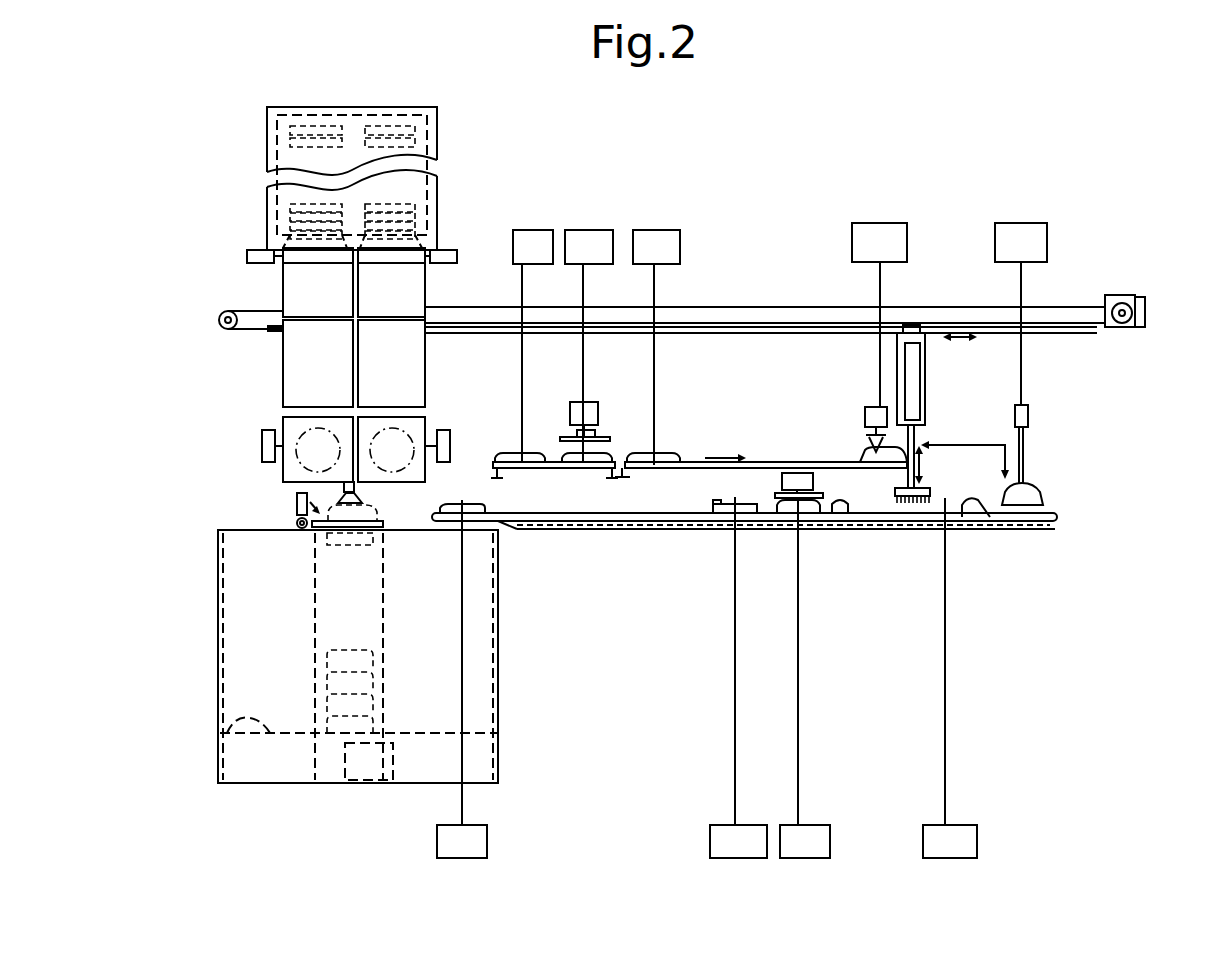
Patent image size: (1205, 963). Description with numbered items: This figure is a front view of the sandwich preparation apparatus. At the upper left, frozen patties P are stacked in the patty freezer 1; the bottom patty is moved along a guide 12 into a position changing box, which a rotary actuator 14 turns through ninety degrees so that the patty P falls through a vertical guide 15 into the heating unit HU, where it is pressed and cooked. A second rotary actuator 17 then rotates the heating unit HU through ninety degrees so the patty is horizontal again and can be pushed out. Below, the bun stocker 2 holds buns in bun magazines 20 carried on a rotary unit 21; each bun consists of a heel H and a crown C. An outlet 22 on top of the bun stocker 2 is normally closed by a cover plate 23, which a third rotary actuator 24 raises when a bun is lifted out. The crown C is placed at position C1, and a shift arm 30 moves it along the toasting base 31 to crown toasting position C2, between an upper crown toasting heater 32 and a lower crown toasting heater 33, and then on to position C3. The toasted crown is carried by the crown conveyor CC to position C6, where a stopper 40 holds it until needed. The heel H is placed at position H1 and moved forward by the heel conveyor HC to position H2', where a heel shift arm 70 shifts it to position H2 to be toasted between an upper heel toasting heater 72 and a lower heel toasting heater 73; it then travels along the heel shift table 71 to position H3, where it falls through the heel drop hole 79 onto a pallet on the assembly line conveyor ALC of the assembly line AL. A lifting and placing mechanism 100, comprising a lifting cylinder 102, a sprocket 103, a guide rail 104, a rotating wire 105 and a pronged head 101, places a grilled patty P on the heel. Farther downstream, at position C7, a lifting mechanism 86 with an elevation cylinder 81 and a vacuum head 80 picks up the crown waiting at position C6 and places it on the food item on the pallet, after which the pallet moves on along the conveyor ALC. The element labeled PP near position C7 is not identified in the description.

The patty freezer 1 is at (251, 132).
The patty P is at (412, 137).
The bun stocker 2 is at (211, 708).
The guide 12 is at (295, 292).
The rotary actuator 14 is at (252, 250).
The vertical guide 15 is at (298, 377).
The second rotary actuator 17 is at (262, 443).
The bun magazine 20 is at (317, 603).
The rotary unit 21 is at (220, 733).
The outlet 22 is at (370, 513).
The cover plate 23 is at (298, 492).
The third rotary actuator 24 is at (300, 500).
The shift arm 30 is at (497, 453).
The toasting base 31 is at (553, 450).
The upper crown toasting heater 32 is at (605, 450).
The lower crown toasting heater 33 is at (610, 460).
The stopper 40 is at (890, 423).
The heel shift arm 70 is at (712, 507).
The heel shift table 71 is at (853, 500).
The upper heel toasting heater 72 is at (776, 470).
The lower heel toasting heater 73 is at (777, 500).
The heel drop hole 79 is at (972, 500).
The vacuum head 80 is at (885, 447).
The elevation cylinder 81 is at (858, 420).
The lifting mechanism 86 is at (827, 418).
The lifting and placing mechanism 100 is at (895, 481).
The head 101 is at (932, 485).
The lifting cylinder 102 is at (908, 385).
The sprocket 103 is at (225, 328).
The guide rail 104 is at (1097, 327).
The rotating wire 105 is at (1067, 300).
The heating unit HU is at (280, 469).
The heel H is at (480, 502).
The heel conveyor HC is at (500, 519).
The crown C is at (535, 477).
The crown conveyor CC is at (632, 452).
The alignment AL is at (965, 463).
The assembly line conveyor ALC is at (1060, 517).
The pick-up pad PP is at (1033, 417).
The position C1 is at (533, 345).
The crown toasting position C2 is at (589, 345).
The position C3 is at (656, 347).
The position C6 is at (879, 315).
The position C7 is at (1021, 314).
The position H1 is at (462, 679).
The position H2' is at (738, 678).
The position H2 is at (805, 679).
The position H3 is at (950, 678).